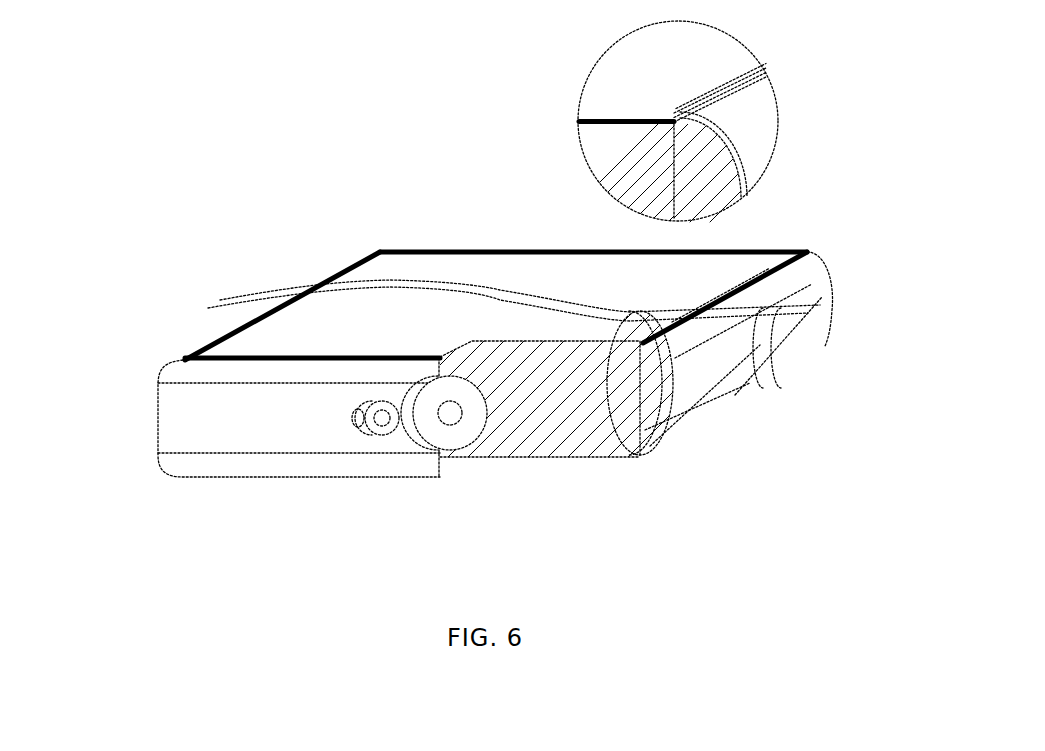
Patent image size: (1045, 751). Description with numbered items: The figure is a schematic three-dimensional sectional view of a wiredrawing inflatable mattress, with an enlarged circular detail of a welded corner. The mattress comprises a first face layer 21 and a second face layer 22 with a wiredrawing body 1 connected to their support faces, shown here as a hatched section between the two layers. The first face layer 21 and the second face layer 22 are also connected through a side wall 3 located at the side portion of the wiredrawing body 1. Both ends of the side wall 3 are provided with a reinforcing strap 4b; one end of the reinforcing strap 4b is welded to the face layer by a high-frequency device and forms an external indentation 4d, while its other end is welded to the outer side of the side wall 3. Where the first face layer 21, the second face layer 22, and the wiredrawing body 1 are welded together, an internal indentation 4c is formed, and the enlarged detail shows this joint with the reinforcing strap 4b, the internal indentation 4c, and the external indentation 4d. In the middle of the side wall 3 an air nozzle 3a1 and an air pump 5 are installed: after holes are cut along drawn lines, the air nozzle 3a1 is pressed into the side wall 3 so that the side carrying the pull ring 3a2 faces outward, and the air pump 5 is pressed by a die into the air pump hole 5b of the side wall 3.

The wiredrawing body 1 is at (547, 400).
The first face layer 21 is at (447, 272).
The second face layer 22 is at (600, 452).
The side wall 3 is at (705, 378).
The air nozzle 3a1 is at (383, 418).
The pull ring 3a2 is at (350, 420).
The reinforcing strap 4b is at (790, 277).
The internal indentation 4c is at (720, 93).
The external indentation 4d is at (733, 95).
The air pump 5 is at (473, 422).
The air pump hole 5b is at (433, 450).